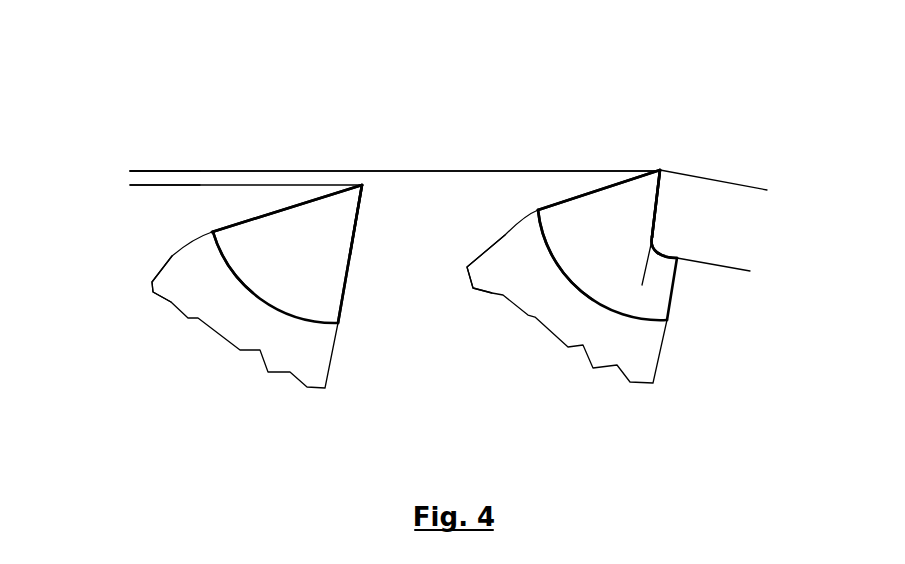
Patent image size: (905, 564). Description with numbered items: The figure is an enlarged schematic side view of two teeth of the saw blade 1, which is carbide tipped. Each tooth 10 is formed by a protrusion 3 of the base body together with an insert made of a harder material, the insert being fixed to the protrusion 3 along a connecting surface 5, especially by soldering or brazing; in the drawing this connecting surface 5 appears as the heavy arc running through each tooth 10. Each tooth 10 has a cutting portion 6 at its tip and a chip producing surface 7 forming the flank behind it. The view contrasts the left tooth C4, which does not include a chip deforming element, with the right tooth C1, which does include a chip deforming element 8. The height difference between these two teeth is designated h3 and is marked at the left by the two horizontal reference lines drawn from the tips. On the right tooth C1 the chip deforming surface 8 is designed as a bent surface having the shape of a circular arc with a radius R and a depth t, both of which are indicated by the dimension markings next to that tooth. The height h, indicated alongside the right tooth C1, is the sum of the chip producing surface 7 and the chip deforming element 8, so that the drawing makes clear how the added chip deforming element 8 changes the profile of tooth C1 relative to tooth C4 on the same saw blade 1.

The saw blade 1 is at (450, 125).
The protrusion 3 is at (183, 278).
The connecting surface 5 is at (235, 263).
The cutting portion 6 is at (362, 185).
The chip producing surface 7 is at (355, 248).
The chip deforming element 8 is at (673, 252).
The tooth 10 is at (302, 225).
The right tooth C1 is at (607, 263).
The left tooth C4 is at (312, 278).
The height difference h3 is at (135, 160).
The height h is at (747, 271).
The depth t is at (727, 295).
The radius R is at (747, 173).